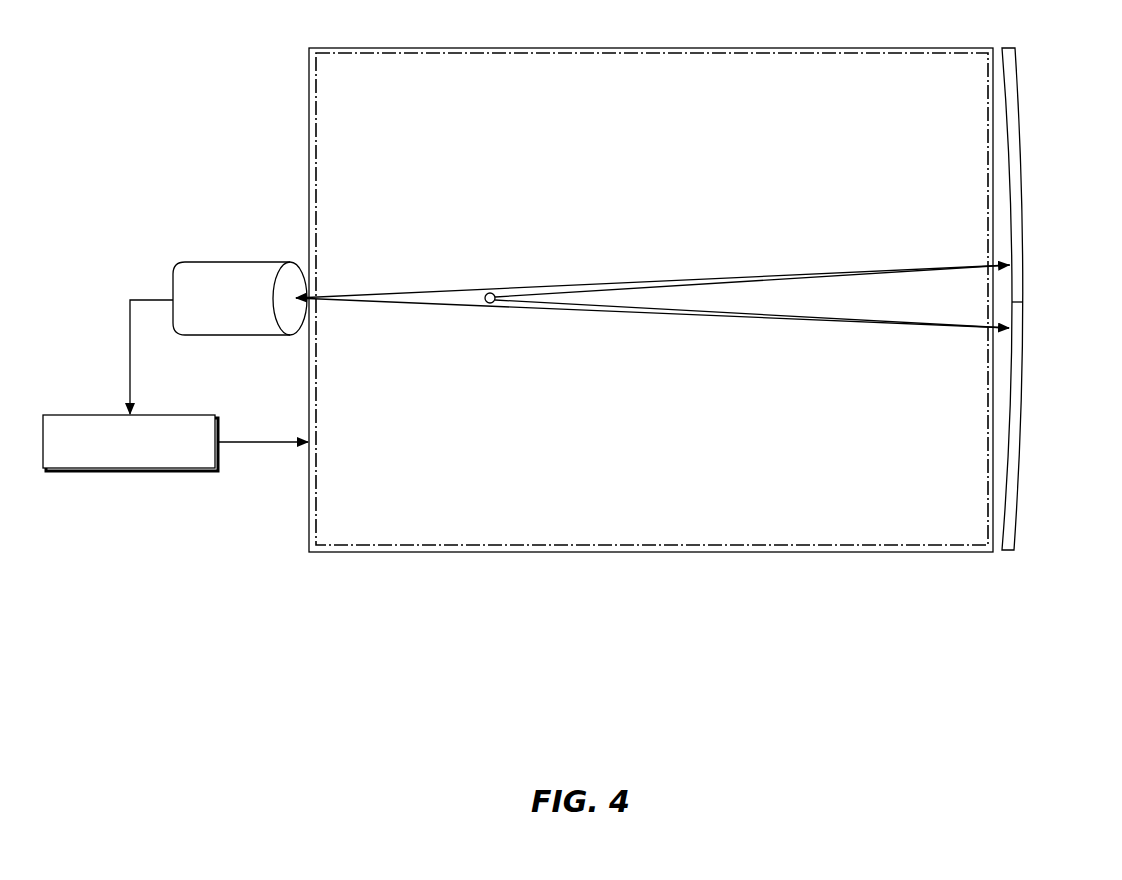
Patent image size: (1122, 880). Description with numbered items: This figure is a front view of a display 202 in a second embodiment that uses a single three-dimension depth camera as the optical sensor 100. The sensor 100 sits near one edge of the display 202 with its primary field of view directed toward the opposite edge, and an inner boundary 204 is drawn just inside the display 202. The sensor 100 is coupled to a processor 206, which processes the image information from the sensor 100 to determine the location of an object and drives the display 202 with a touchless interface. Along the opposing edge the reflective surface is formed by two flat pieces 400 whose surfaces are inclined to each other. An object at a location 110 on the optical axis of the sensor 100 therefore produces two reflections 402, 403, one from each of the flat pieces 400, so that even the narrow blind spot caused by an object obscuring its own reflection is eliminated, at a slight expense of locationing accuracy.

The optical sensor 100 is at (200, 262).
The point / target location 110 is at (490, 293).
The display 202 is at (309, 98).
The inner boundary 204 is at (316, 165).
The processor 206 is at (147, 415).
The flat pieces 400 is at (1017, 193).
The reflection 402 is at (705, 278).
The reflection 403 is at (705, 320).